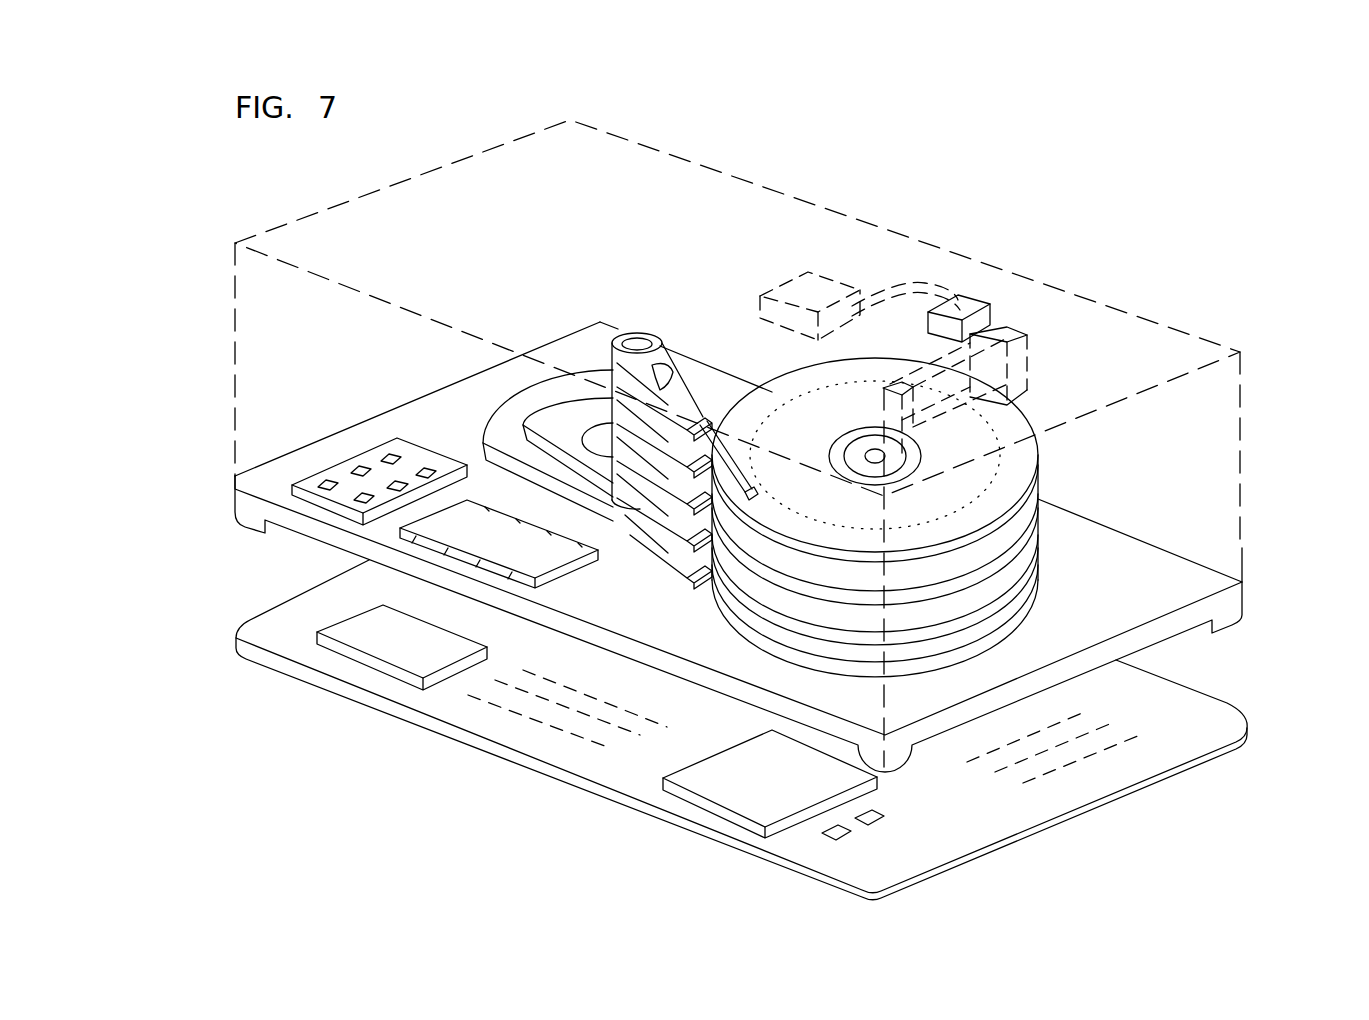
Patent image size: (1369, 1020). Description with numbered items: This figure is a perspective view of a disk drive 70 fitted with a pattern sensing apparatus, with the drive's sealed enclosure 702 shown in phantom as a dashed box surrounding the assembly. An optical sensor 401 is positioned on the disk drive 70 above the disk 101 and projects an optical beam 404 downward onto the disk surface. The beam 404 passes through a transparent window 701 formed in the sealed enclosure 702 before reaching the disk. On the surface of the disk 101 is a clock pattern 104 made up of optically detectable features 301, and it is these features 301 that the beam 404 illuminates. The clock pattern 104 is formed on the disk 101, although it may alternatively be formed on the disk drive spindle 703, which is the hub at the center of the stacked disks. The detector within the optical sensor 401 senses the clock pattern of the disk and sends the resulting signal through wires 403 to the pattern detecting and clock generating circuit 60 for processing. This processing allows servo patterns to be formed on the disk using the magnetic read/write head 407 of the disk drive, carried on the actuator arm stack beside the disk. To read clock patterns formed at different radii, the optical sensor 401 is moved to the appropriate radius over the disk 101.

The disk drive 70 is at (190, 318).
The sealed enclosure 702 is at (645, 240).
The pattern detecting and clock generating circuit 60 is at (812, 292).
The wires 403 is at (907, 286).
The optical sensor 401 is at (990, 308).
The transparent window 701 is at (1024, 332).
The optical beam 404 is at (975, 378).
The optically detectable features 301 is at (975, 413).
The disk 101 is at (1017, 477).
The clock pattern 104 is at (860, 533).
The disk drive spindle 703 is at (887, 473).
The magnetic read/write head 407 is at (745, 497).